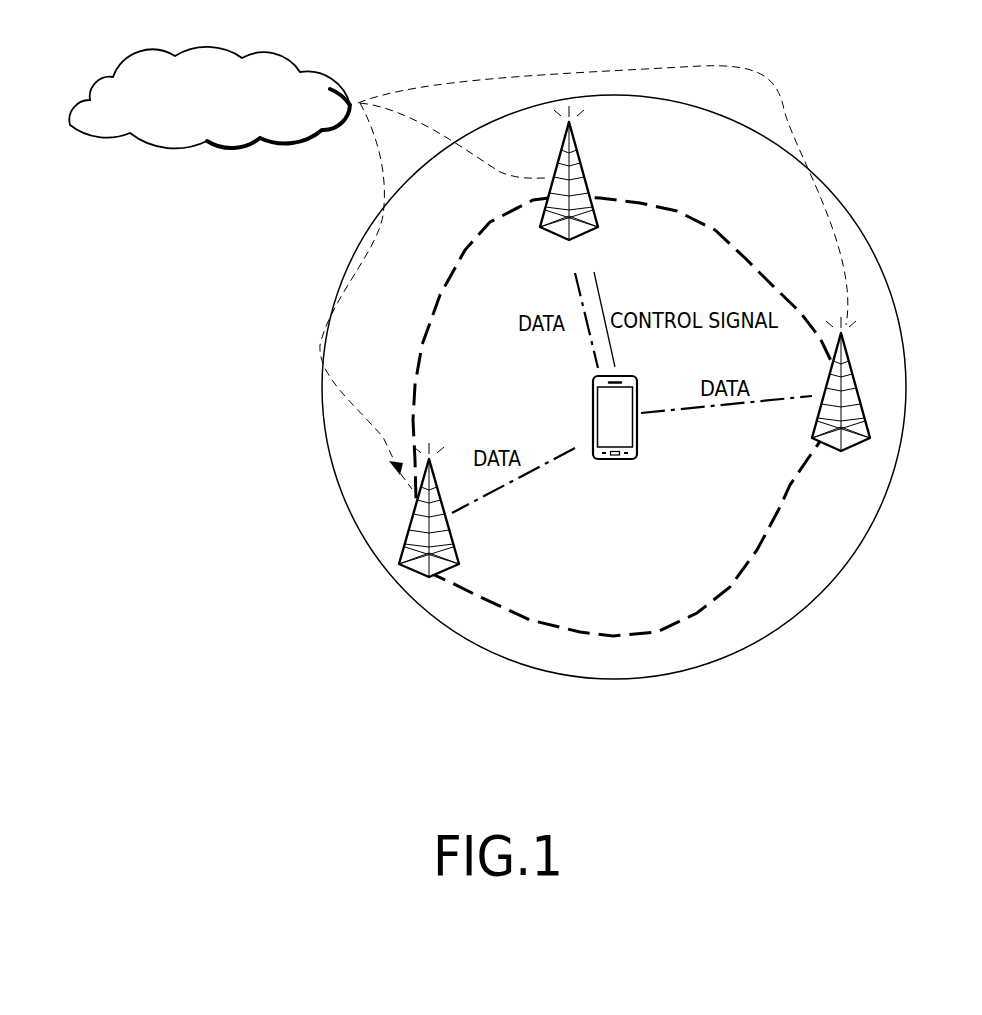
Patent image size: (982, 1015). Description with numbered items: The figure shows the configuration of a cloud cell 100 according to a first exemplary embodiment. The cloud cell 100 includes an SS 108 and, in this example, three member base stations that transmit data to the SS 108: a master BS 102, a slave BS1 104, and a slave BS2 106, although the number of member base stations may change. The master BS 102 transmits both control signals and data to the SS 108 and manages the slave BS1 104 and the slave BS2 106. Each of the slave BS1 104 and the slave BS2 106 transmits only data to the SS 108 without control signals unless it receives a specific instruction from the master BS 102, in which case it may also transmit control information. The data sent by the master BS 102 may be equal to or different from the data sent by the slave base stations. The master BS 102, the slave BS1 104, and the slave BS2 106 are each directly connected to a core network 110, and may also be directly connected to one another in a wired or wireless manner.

The cloud cell 100 is at (825, 188).
The master BS 102 is at (590, 178).
The slave BS1 104 is at (841, 455).
The slave BS2 106 is at (452, 530).
The SS 108 is at (613, 462).
The core network 110 is at (207, 47).